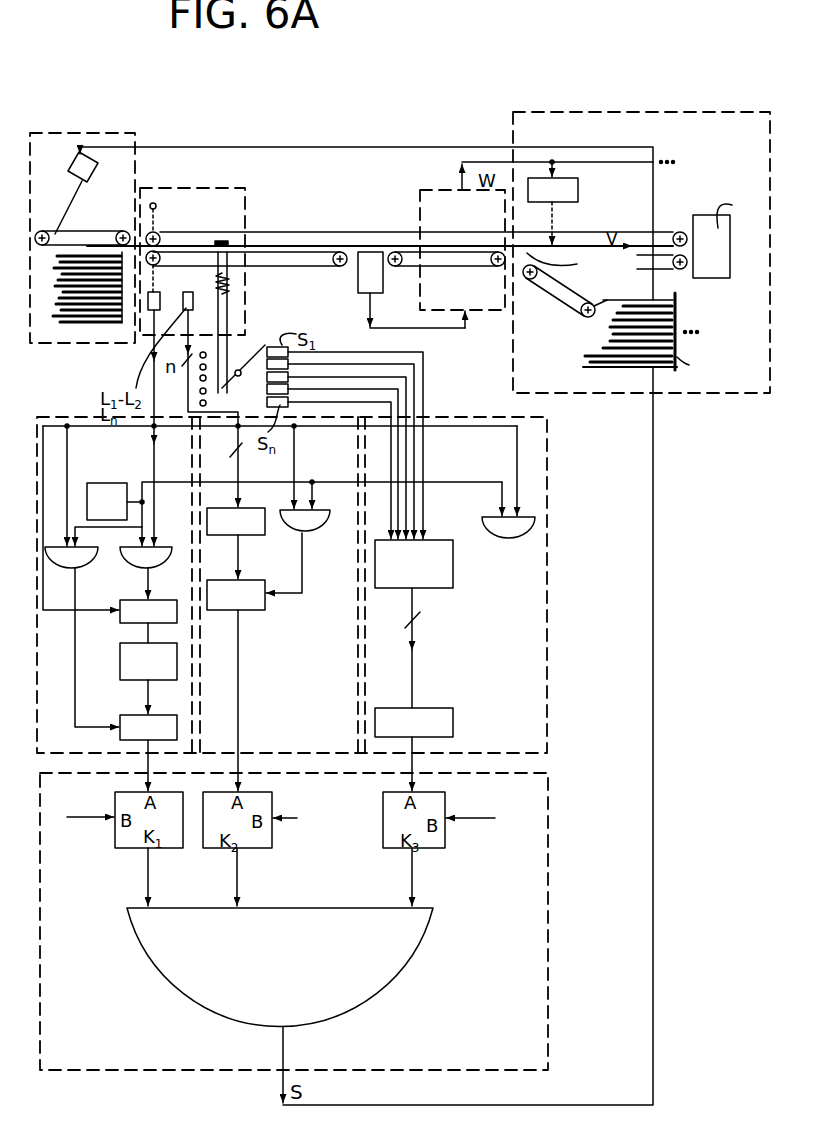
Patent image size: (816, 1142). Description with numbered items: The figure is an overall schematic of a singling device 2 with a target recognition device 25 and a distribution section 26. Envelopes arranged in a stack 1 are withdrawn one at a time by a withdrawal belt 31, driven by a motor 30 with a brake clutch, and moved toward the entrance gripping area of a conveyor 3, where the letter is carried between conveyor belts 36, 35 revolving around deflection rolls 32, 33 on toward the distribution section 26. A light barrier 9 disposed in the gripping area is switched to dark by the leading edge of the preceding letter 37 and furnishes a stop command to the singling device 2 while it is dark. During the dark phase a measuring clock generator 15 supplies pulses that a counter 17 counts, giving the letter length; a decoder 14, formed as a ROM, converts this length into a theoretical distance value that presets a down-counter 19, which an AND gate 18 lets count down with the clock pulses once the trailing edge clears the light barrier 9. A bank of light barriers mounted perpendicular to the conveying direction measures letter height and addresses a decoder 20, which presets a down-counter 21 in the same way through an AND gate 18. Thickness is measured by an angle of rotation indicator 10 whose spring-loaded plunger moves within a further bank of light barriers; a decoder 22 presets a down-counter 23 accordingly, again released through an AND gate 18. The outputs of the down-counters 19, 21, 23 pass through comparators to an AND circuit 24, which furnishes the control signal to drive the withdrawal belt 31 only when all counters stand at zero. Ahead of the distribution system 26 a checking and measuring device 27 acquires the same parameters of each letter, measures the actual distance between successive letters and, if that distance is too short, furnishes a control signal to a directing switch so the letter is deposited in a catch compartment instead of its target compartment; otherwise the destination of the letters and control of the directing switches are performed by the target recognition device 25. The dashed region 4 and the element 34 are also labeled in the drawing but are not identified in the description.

The stack 1 is at (75, 250).
The singling device 2 is at (80, 333).
The conveyor 3 is at (412, 268).
The measuring station 4 is at (192, 261).
The light barrier 9 is at (157, 300).
The angle of rotation indicator 10 is at (227, 277).
The decoder 14 is at (148, 661).
The measuring clock generator 15 is at (114, 501).
The counter 17 is at (148, 612).
The AND gate 18 is at (290, 552).
The down-counter 19 is at (148, 727).
The decoder 20 is at (236, 521).
The down-counter 21 is at (236, 595).
The decoder 22 is at (414, 564).
The down-counter 23 is at (414, 722).
The AND circuit 24 is at (281, 966).
The target recognition device 25 is at (368, 270).
The distribution section 26 is at (617, 140).
The checking and measuring device 27 is at (433, 198).
The motor 30 is at (78, 163).
The withdrawal belt 31 is at (106, 232).
The deflection roll 32 is at (153, 204).
The deflection roll 33 is at (194, 218).
The transport belt 34 is at (233, 245).
The conveyor belt 35 is at (250, 267).
The conveyor belt 36 is at (130, 288).
The preceding letter 37 is at (136, 233).